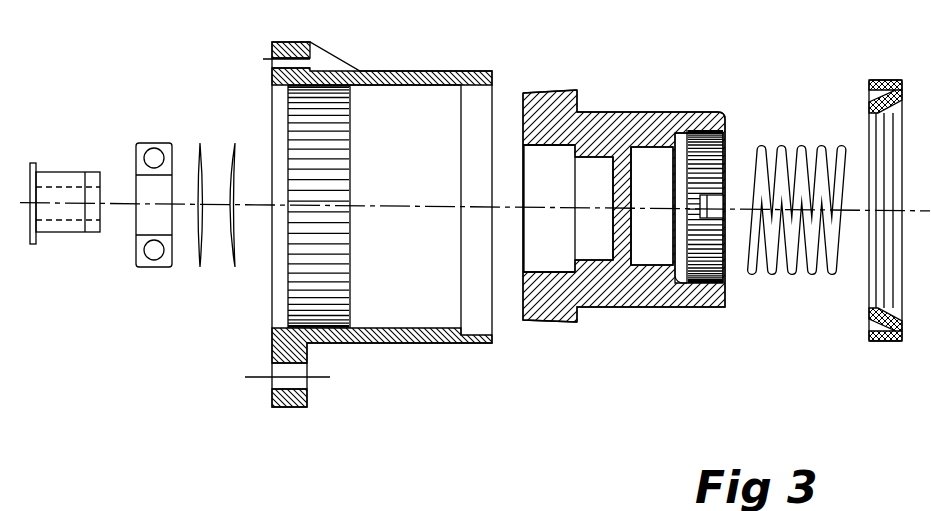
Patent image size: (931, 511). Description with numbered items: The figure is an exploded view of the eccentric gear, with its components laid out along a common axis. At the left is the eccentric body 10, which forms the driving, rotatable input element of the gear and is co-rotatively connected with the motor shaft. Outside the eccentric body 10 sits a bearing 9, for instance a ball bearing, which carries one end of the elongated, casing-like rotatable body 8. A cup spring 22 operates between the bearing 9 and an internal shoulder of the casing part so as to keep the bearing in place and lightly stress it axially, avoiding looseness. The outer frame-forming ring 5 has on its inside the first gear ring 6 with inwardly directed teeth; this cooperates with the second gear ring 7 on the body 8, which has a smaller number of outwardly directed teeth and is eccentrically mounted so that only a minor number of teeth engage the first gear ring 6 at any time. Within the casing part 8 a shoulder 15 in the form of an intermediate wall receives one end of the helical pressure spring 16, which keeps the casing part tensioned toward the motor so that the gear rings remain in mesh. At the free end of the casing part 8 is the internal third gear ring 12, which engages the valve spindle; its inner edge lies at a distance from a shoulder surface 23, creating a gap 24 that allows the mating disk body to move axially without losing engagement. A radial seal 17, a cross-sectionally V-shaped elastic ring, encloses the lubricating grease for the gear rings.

The frame-forming ring 5 is at (398, 71).
The first gear ring 6 is at (320, 88).
The second gear ring 7 is at (549, 92).
The rotatable body 8 is at (633, 112).
The bearing 9 is at (143, 143).
The eccentric body 10 is at (60, 233).
The third gear ring 12 is at (708, 278).
The shoulder 15 is at (628, 195).
The pressure spring 16 is at (800, 148).
The radial seal 17 is at (881, 80).
The cup spring 22 is at (203, 255).
The shoulder surface 23 is at (681, 284).
The gap 24 is at (681, 135).